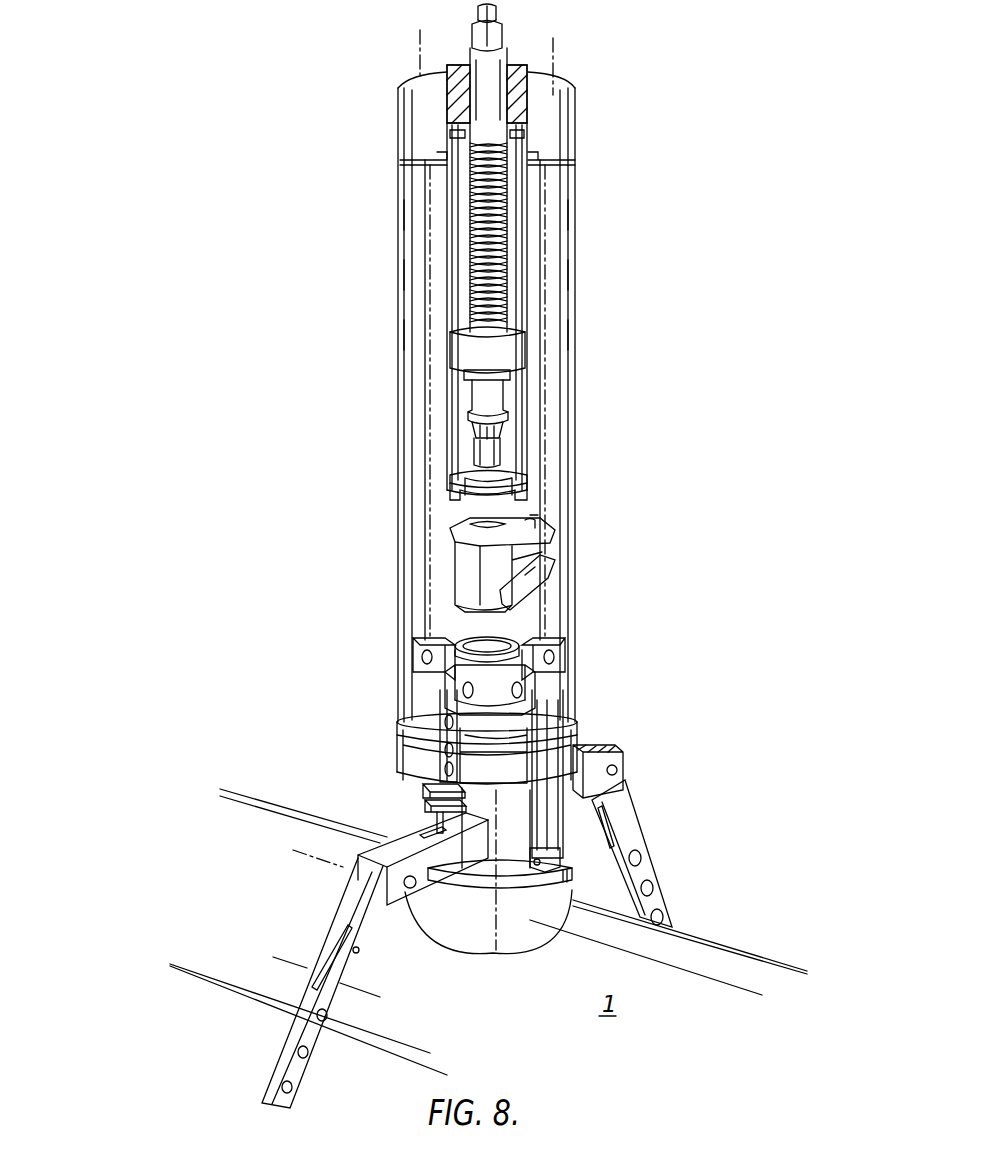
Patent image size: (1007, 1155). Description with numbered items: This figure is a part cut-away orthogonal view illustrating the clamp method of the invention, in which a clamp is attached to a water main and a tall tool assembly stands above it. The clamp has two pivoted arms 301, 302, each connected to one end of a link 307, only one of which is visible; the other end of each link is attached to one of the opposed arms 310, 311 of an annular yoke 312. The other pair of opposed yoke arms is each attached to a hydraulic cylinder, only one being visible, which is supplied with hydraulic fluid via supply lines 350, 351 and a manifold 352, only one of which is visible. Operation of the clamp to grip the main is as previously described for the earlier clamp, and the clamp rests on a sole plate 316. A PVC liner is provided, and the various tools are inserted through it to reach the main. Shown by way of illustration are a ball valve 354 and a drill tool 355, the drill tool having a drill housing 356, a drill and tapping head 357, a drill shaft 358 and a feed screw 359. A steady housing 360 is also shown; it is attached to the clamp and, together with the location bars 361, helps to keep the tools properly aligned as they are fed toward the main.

The pivoted arm 301 is at (652, 853).
The pivoted arm 302 is at (345, 935).
The link 307 is at (430, 757).
The yoke arm 310 is at (550, 648).
The yoke arm 311 is at (440, 690).
The annular yoke 312 is at (562, 681).
The sole plate 316 is at (553, 900).
The supply line 350 is at (416, 478).
The supply line 351 is at (578, 722).
The manifold 352 is at (582, 790).
The ball valve 354 is at (562, 560).
The drill tool 355 is at (545, 331).
The drill housing 356 is at (530, 428).
The drill and tapping head 357 is at (485, 449).
The drill shaft 358 is at (476, 15).
The feed screw 359 is at (488, 66).
The steady housing 360 is at (540, 250).
The location bar 361 is at (428, 157).